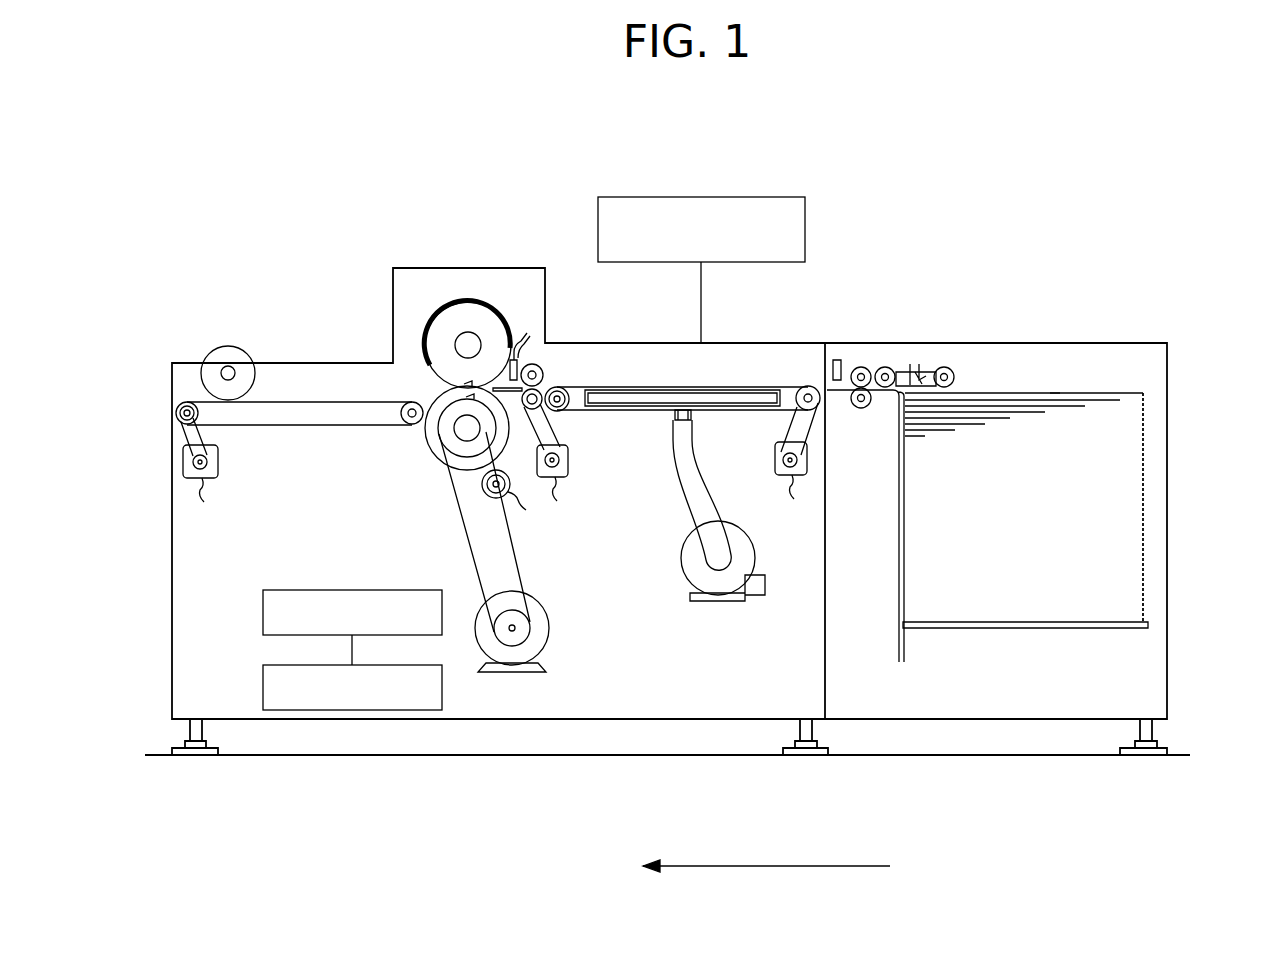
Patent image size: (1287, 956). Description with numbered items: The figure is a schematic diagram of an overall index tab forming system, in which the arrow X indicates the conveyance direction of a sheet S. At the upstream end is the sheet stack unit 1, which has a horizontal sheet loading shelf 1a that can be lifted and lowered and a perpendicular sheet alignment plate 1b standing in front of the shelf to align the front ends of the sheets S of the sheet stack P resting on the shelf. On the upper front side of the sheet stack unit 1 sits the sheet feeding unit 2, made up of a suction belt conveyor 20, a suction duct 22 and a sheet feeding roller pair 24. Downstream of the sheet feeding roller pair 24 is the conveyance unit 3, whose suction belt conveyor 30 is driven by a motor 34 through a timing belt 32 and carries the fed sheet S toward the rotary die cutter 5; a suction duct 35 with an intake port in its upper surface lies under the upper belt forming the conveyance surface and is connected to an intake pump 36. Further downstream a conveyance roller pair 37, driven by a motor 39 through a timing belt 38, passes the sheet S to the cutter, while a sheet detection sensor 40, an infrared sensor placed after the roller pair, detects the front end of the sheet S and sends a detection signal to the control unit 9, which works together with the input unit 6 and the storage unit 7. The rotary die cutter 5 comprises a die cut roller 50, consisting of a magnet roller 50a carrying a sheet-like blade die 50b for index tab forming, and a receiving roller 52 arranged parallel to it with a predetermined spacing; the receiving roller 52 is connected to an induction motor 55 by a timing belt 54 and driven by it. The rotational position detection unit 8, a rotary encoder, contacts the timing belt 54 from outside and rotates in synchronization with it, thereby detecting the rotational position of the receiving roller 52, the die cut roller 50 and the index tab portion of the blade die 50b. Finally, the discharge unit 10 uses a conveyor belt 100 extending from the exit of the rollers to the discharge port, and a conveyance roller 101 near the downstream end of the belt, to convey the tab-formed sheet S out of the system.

The sheet stack unit 1 is at (1147, 546).
The sheet loading shelf 1a is at (1105, 628).
The sheet alignment plate 1b is at (899, 502).
The sheet feeding unit 2 is at (910, 317).
The conveyance unit 3 is at (646, 388).
The rotary die cutter 5 is at (465, 420).
The input unit 6 is at (742, 197).
The storage unit 7 is at (263, 608).
The rotational position detection unit 8 is at (500, 498).
The control unit 9 is at (263, 688).
The discharge unit 10 is at (288, 396).
The suction belt conveyor 20 is at (893, 370).
The suction duct 22 is at (934, 372).
The sheet feeding roller pair 24 is at (857, 367).
The suction belt conveyor 30 is at (670, 473).
The timing belt 32 is at (800, 430).
The motor 34 is at (782, 455).
The suction duct 35 is at (668, 420).
The intake pump 36 is at (720, 590).
The conveyance roller pair 37 is at (541, 370).
The timing belt 38 is at (628, 412).
The motor 39 is at (560, 462).
The sheet detection sensor 40 is at (546, 355).
The die cut roller 50 is at (448, 278).
The magnet roller 50a is at (445, 327).
The blade die 50b is at (467, 286).
The receiving roller 52 is at (426, 425).
The timing belt 54 is at (458, 512).
The motor 55 is at (548, 628).
The conveyor belt 100 is at (330, 425).
The conveyance roller 101 is at (211, 356).
The sheet stack P is at (1008, 535).
The sheet S is at (1050, 393).
The conveyance direction X is at (765, 866).